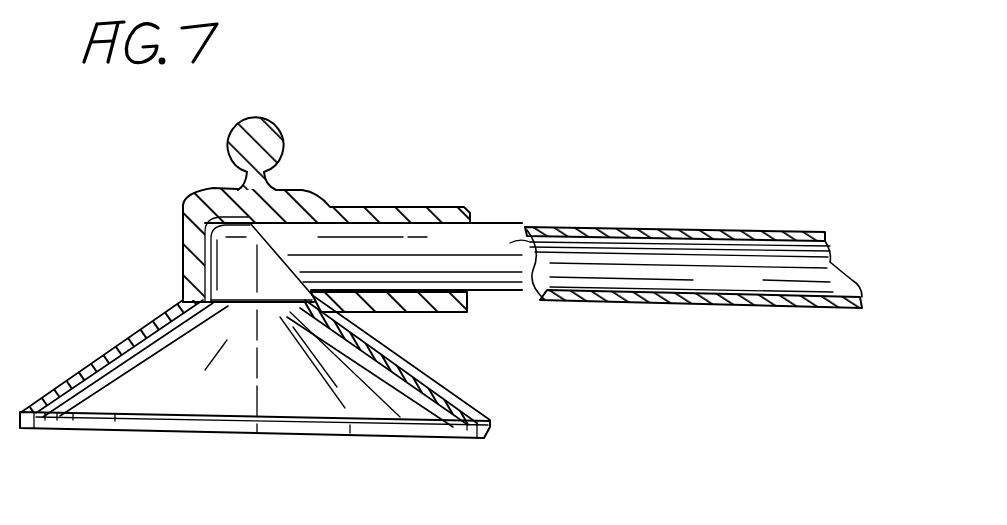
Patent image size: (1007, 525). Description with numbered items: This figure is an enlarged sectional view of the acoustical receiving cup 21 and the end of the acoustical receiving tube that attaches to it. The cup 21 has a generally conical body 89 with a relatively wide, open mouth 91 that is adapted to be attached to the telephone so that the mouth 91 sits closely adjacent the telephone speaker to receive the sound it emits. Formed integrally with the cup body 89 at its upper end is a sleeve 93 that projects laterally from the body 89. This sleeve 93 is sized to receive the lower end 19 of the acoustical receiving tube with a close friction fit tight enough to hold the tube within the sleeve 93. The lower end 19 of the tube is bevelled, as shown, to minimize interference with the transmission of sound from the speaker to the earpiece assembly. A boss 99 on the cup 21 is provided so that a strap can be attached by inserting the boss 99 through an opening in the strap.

The lower end of the acoustical receiving tube 19 is at (550, 230).
The acoustical receiving cup 21 is at (181, 257).
The conical body 89 is at (443, 396).
The open mouth 91 is at (390, 428).
The sleeve 93 is at (363, 207).
The boss 99 is at (274, 134).